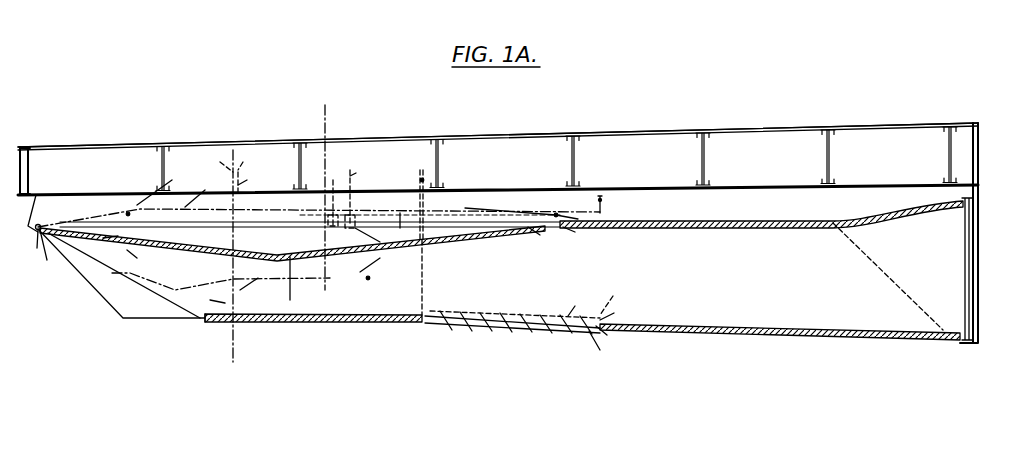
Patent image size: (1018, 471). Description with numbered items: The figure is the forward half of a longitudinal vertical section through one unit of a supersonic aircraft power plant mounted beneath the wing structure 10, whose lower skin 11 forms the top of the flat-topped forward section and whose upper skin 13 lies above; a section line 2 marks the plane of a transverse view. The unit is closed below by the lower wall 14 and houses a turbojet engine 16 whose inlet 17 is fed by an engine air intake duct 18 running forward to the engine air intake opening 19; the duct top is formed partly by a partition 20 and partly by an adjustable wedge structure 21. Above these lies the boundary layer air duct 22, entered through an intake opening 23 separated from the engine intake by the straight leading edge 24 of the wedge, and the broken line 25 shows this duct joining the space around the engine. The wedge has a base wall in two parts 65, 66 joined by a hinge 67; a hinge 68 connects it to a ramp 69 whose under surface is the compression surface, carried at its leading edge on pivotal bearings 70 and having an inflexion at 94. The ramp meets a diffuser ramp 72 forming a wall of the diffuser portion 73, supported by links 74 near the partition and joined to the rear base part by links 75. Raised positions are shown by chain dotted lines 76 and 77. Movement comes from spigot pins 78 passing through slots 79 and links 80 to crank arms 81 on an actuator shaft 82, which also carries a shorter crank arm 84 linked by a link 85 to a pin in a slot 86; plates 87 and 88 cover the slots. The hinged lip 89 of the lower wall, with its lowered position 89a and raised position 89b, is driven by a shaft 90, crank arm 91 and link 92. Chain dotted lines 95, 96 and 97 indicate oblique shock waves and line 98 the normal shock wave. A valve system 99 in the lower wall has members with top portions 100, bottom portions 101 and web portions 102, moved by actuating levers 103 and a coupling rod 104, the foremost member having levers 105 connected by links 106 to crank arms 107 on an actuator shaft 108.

The section line 2- 2 is at (318, 107).
The wing structure 10 is at (497, 140).
The lower skin 11 is at (618, 188).
The upper skin 13 is at (617, 128).
The lower wall 14 is at (688, 333).
The turbojet engine 16 is at (973, 273).
The inlet 17 is at (965, 247).
The engine air intake duct 18 is at (683, 284).
The engine air intake opening 19 is at (130, 272).
The partition 20 is at (717, 227).
The adjustable wedge structure 21 is at (397, 262).
The boundary layer air duct 22 is at (686, 215).
The intake opening 23 is at (48, 213).
The leading edge 24 is at (33, 249).
The broken line 25 is at (888, 279).
The base wall part 65 is at (205, 187).
The base wall part 66 is at (401, 209).
The hinge 67 is at (281, 214).
The hinge 68 is at (128, 213).
The ramp 69 is at (192, 256).
The pivotal bearings 70 is at (50, 258).
The ramp 72 is at (451, 253).
The diffuser portion 73 is at (463, 293).
The links 74 is at (617, 203).
The links 75 is at (544, 242).
The chain dotted line 76 is at (365, 210).
The chain dotted line 77 is at (510, 204).
The spigot pins 78 is at (362, 255).
The slots 79 is at (292, 243).
The links 80 is at (317, 209).
The crank arms 81 is at (350, 173).
The actuator shaft 82 is at (371, 143).
The crank arm 84 is at (373, 162).
The link 85 is at (368, 180).
The slot 86 is at (363, 209).
The plate 87 is at (352, 277).
The plate 88 is at (369, 238).
The leading edge portion 89 is at (222, 320).
The fully lowered position 89a is at (238, 330).
The fully raised position 89b is at (202, 290).
The shaft 90 is at (218, 156).
The crank arm 91 is at (250, 167).
The link 92 is at (256, 172).
The inflexion 94 is at (99, 241).
The chain dotted line 95 is at (208, 277).
The chain dotted line 96 is at (120, 254).
The chain dotted line 97 is at (249, 270).
The chain dotted line 98 is at (306, 280).
The valve system 99 is at (520, 327).
The top portion 100 is at (625, 306).
The bottom portion 101 is at (620, 340).
The web portions 102 is at (609, 352).
The actuating levers 103 is at (621, 295).
The coupling rod 104 is at (581, 300).
The actuating levers 105 is at (429, 343).
The links 106 is at (420, 296).
The crank arms 107 is at (408, 195).
The actuator shaft 108 is at (417, 185).